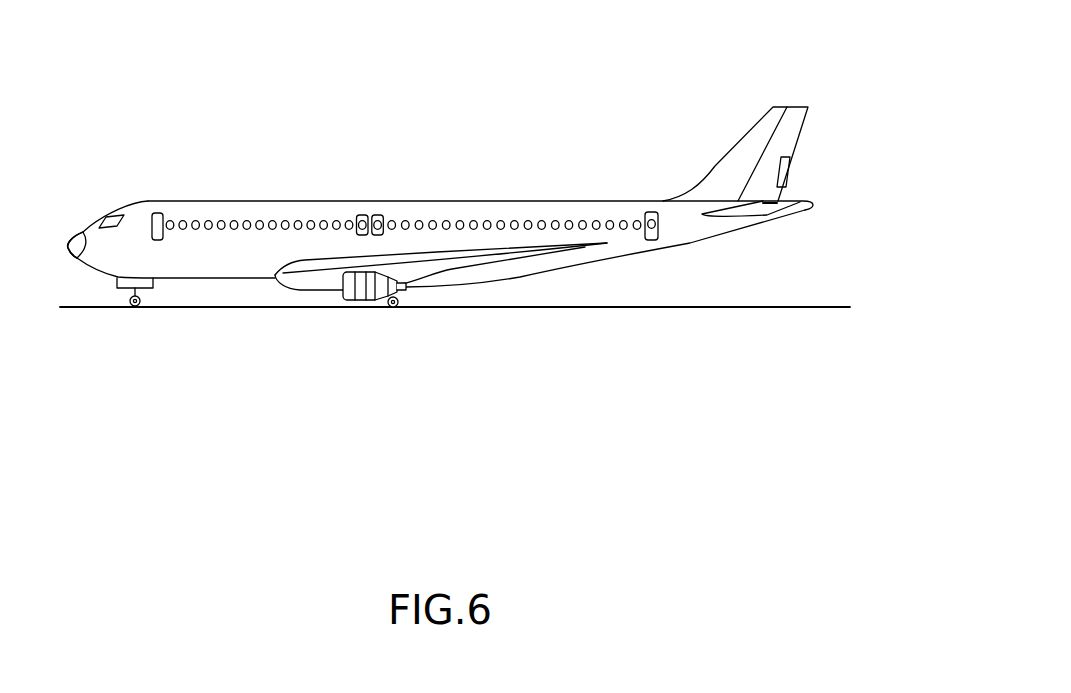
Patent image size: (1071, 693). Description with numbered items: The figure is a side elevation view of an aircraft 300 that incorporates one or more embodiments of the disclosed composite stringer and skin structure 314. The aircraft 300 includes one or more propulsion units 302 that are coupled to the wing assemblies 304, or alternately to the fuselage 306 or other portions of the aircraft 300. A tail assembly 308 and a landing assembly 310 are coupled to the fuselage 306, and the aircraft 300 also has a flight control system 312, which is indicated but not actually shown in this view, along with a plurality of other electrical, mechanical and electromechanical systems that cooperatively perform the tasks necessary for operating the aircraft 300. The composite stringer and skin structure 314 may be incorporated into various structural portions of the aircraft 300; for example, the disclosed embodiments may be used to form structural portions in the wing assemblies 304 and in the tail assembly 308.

The aircraft 300 is at (608, 48).
The propulsion unit 302 is at (352, 296).
The wing assembly 304 is at (458, 262).
The fuselage 306 is at (417, 200).
The tail assembly 308 is at (823, 173).
The landing assembly 310 is at (128, 296).
The flight control system 312 is at (87, 231).
The composite stringer and skin structure 314 is at (620, 248).